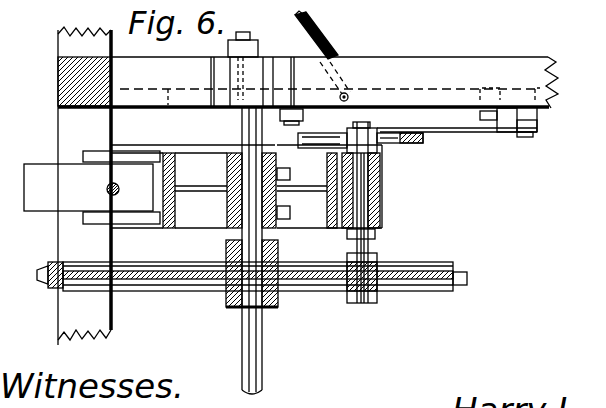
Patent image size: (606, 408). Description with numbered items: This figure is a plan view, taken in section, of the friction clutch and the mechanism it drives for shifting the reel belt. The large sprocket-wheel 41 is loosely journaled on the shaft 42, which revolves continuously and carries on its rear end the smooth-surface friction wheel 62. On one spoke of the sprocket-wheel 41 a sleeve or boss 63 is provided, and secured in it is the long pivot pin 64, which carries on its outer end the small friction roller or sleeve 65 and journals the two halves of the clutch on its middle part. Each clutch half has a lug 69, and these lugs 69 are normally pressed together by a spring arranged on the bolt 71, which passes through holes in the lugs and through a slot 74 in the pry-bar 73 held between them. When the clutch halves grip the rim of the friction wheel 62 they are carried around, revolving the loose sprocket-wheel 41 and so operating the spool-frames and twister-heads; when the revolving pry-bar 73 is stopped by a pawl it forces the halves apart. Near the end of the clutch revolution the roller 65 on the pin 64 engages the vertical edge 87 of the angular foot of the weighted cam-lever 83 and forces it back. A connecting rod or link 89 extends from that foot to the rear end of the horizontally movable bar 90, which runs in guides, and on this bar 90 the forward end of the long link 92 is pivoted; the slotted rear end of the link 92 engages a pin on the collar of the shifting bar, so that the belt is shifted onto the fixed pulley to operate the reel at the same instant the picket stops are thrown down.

The horizontally movable bar 90 is at (308, 82).
The long link 92 is at (322, 33).
The vertical edge 87 is at (310, 122).
The friction roller 65 is at (385, 146).
The cam-lever 83 is at (423, 138).
The connecting rod 89 is at (457, 135).
The friction wheel 62 is at (246, 176).
The shaft 42 is at (242, 140).
The pry-bar 73 is at (92, 187).
The slot 74 is at (119, 189).
The bolt 71 is at (107, 189).
The lug 69 is at (147, 245).
The pivot pin 64 is at (372, 232).
The sleeve 63 is at (377, 268).
The sprocket-wheel 41 is at (433, 270).